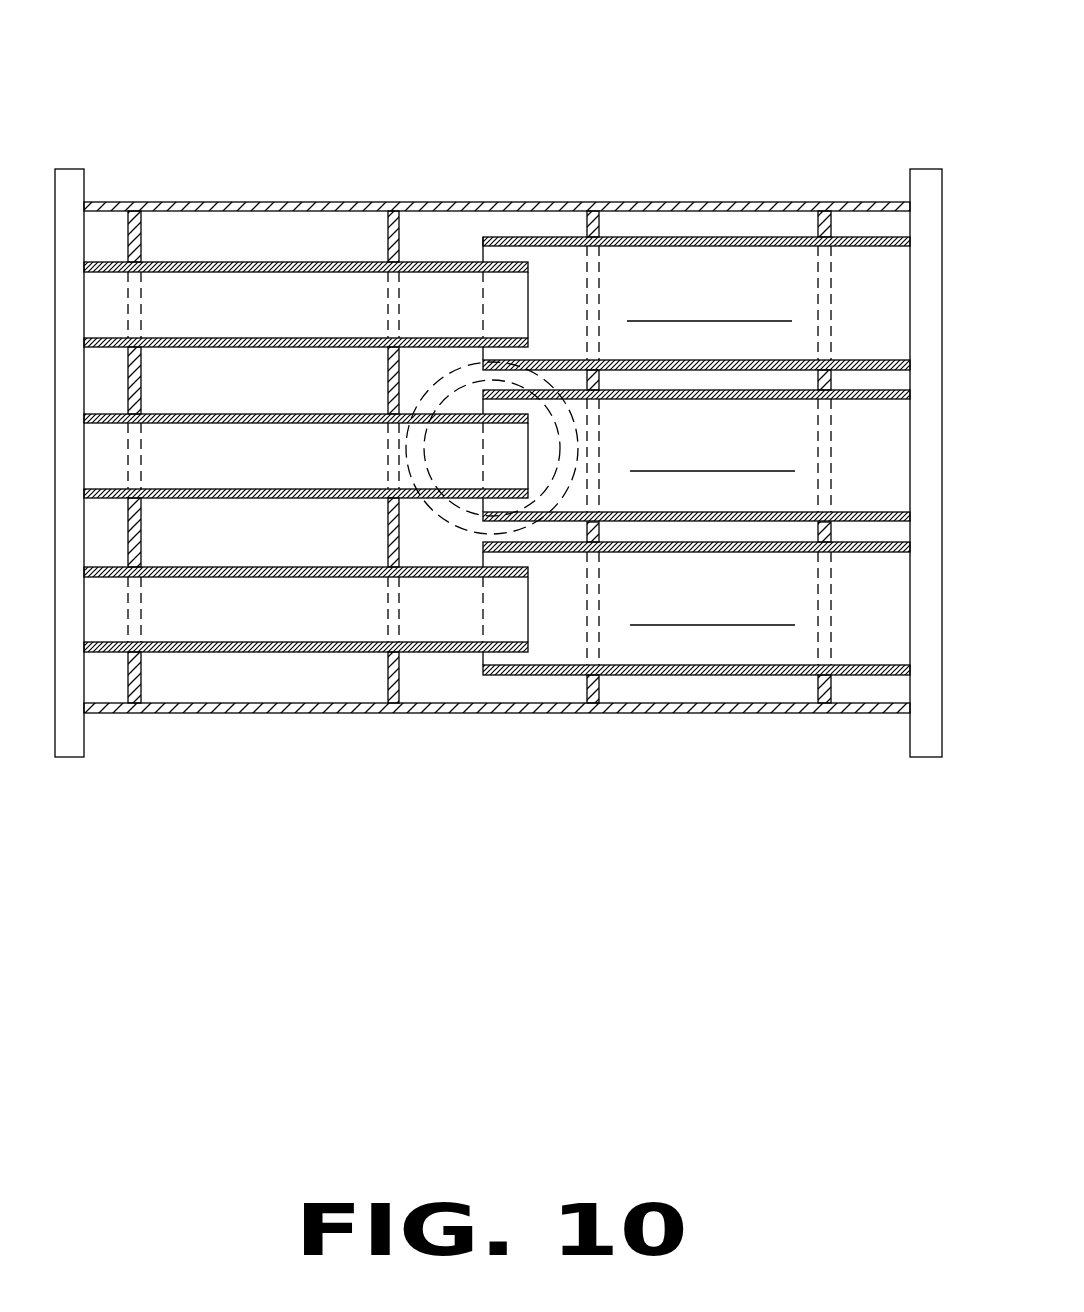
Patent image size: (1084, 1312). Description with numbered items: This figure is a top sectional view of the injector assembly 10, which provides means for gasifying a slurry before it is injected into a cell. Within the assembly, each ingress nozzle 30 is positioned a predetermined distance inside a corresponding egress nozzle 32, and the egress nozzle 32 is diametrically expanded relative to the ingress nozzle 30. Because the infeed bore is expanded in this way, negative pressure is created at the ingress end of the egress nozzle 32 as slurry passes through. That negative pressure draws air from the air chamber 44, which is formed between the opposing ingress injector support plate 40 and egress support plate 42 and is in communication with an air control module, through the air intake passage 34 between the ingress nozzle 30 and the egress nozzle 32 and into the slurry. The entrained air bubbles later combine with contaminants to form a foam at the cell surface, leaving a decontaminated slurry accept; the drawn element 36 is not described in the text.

The injector assembly 10 is at (498, 426).
The ingress nozzle 30 is at (295, 653).
The egress nozzle 32 is at (658, 677).
The air intake passage 34 is at (492, 658).
The spacer 36 is at (385, 253).
The ingress injector support plate 40 is at (385, 253).
The egress support plate 42 is at (600, 232).
The air chamber 44 is at (430, 242).